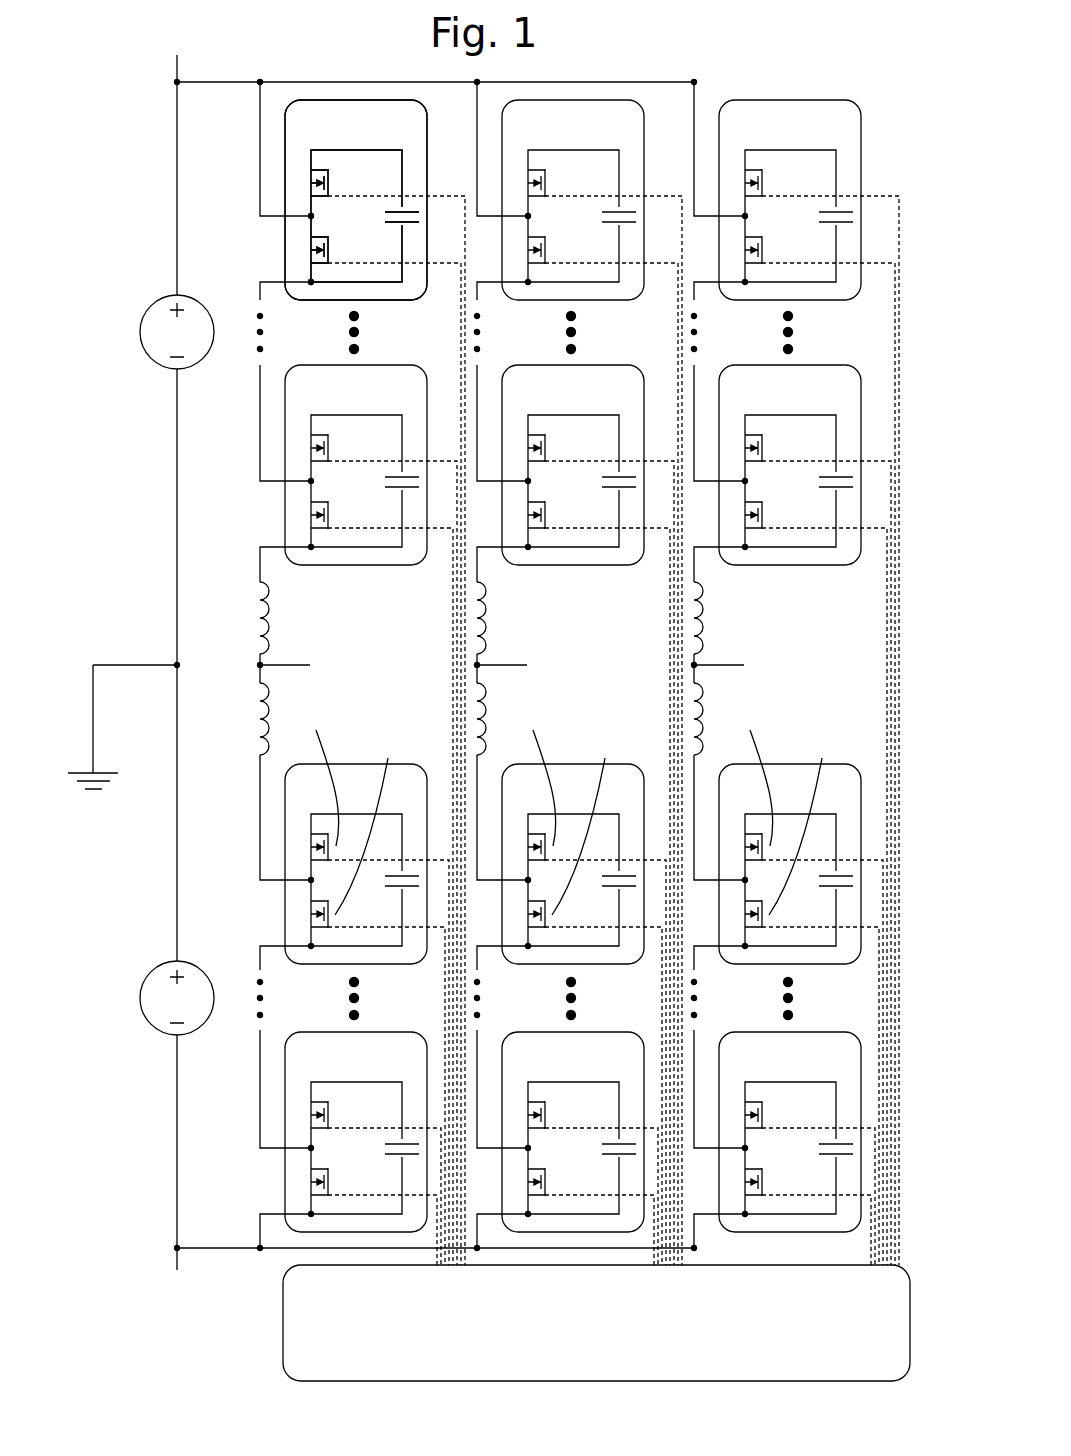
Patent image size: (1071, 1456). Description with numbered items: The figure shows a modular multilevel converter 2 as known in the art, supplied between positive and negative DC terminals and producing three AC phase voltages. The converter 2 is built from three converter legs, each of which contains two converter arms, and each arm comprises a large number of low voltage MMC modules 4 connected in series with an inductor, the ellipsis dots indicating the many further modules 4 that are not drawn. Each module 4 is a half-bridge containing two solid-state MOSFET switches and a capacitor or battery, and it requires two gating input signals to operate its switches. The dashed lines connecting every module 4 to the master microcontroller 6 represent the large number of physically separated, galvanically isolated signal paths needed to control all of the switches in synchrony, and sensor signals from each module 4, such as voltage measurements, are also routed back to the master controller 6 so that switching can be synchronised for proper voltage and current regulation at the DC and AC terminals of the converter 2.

The modular multilevel converter 2 is at (121, 92).
The MMC module 4 is at (330, 112).
The master microcontroller 6 is at (600, 1343).